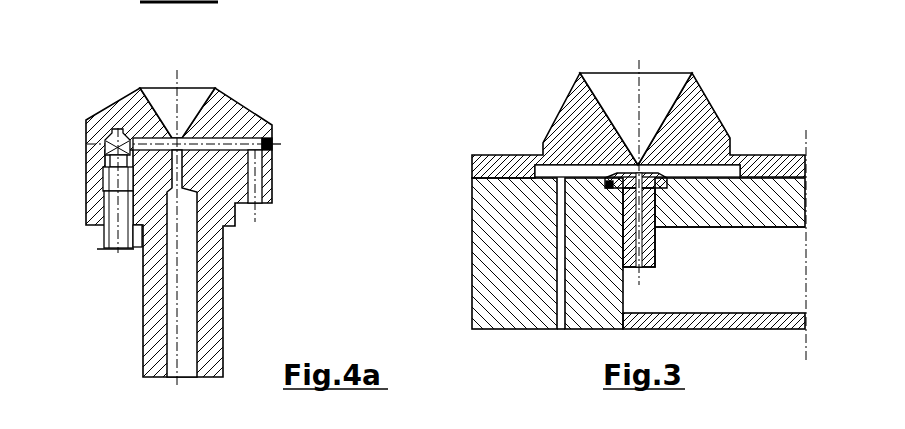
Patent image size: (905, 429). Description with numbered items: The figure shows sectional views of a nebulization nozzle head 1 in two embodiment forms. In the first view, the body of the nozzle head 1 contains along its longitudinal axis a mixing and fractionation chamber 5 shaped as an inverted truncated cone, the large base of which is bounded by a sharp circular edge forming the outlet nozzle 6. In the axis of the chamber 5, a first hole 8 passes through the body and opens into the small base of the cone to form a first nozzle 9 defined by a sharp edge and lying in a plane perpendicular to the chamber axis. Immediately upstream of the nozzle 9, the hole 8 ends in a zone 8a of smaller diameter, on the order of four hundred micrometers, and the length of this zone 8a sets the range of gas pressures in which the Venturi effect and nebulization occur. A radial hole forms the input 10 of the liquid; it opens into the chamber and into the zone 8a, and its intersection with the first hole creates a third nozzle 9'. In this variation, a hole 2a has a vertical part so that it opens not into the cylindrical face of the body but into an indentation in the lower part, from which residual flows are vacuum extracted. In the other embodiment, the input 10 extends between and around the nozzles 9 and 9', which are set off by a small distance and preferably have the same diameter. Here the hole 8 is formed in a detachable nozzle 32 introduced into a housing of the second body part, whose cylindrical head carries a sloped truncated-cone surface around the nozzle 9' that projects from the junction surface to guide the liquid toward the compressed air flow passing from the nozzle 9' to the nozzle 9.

In FIG. 4A, the nozzle head 1 is at (208, 313).
In FIG. 4A, the mixing and fractionation chamber 5 is at (193, 107).
In FIG. 4A, the first nozzle 9 is at (142, 210).
In FIG. 3, the first nozzle 9 is at (688, 163).
In FIG. 4A, the third nozzle 9' is at (244, 263).
In FIG. 3, the third nozzle 9' is at (725, 125).
In FIG. 4A, the hole 2a is at (272, 123).
In FIG. 3, the outlet nozzle 6 is at (632, 107).
In FIG. 3, the input of the liquid 10 is at (583, 173).
In FIG. 3, the first hole 8 is at (656, 237).
In FIG. 3, the zone having a smaller diameter 8a is at (668, 186).
In FIG. 3, the detachable nozzle 32 is at (656, 248).